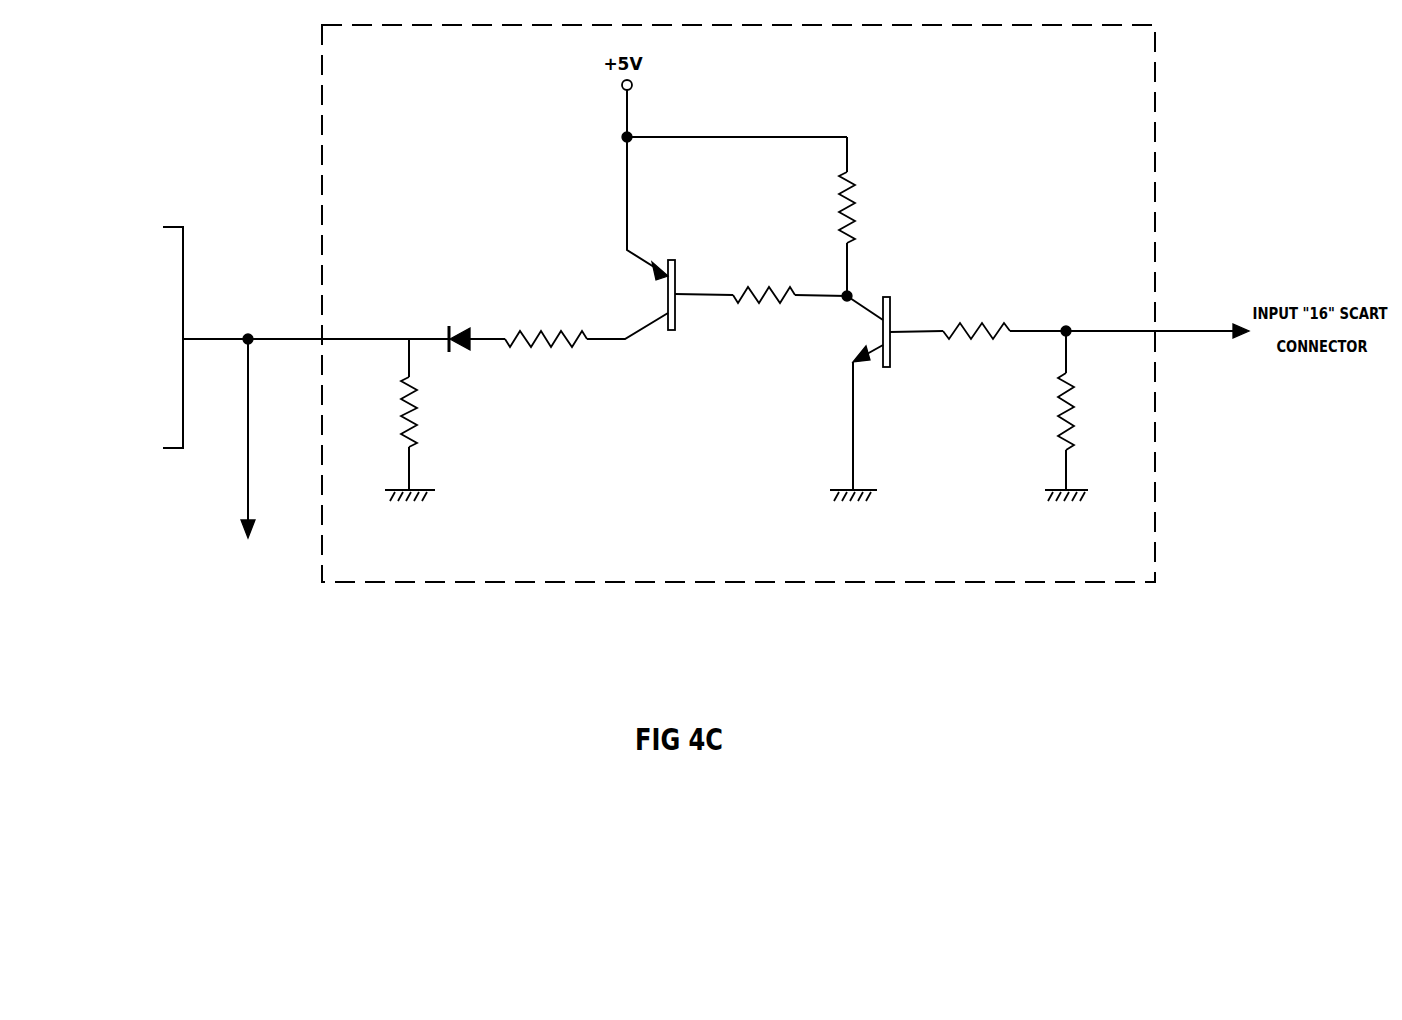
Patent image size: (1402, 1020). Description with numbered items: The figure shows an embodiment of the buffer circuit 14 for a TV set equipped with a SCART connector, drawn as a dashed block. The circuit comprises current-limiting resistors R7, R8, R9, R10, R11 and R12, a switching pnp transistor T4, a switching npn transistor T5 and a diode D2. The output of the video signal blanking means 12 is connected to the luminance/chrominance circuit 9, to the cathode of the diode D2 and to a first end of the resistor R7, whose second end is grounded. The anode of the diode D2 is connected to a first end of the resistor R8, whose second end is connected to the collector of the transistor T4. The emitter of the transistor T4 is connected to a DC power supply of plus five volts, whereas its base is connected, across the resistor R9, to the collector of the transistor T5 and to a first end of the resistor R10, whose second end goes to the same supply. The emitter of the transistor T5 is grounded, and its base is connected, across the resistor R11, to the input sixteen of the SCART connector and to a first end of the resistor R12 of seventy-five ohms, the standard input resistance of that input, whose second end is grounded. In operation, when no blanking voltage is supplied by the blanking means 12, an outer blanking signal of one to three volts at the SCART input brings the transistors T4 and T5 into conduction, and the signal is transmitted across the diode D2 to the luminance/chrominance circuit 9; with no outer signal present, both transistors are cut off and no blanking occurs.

The video signal blanking means 12 is at (185, 252).
The buffer circuit 14 is at (1102, 582).
The luminance/chrominance circuit 9 is at (178, 473).
The resistor R7 is at (418, 420).
The resistor R8 is at (546, 322).
The resistor R9 is at (790, 283).
The resistor R10 is at (871, 216).
The resistor R11 is at (1004, 316).
The resistor R12 is at (1045, 416).
The diode D2 is at (473, 324).
The switching pnp transistor T4 is at (660, 238).
The switching npn transistor T5 is at (886, 398).